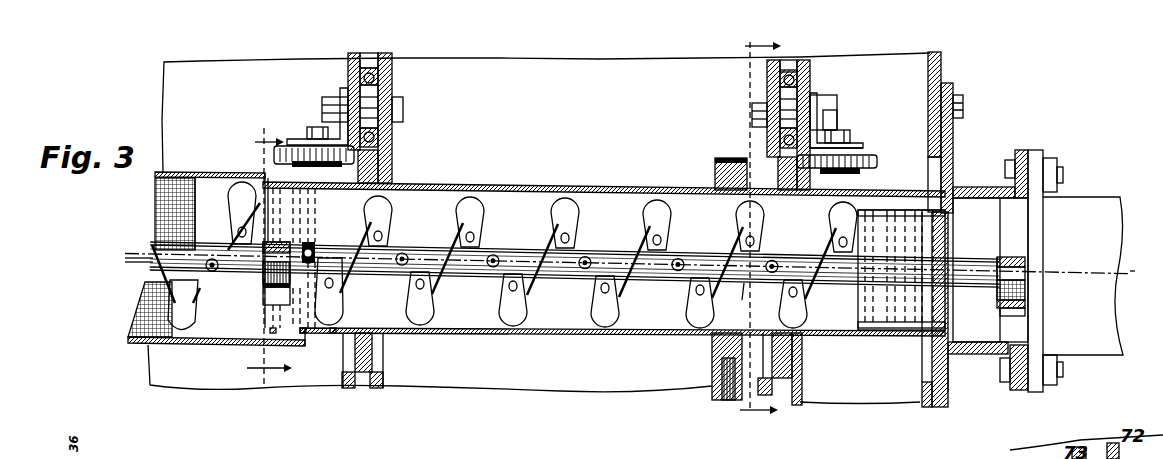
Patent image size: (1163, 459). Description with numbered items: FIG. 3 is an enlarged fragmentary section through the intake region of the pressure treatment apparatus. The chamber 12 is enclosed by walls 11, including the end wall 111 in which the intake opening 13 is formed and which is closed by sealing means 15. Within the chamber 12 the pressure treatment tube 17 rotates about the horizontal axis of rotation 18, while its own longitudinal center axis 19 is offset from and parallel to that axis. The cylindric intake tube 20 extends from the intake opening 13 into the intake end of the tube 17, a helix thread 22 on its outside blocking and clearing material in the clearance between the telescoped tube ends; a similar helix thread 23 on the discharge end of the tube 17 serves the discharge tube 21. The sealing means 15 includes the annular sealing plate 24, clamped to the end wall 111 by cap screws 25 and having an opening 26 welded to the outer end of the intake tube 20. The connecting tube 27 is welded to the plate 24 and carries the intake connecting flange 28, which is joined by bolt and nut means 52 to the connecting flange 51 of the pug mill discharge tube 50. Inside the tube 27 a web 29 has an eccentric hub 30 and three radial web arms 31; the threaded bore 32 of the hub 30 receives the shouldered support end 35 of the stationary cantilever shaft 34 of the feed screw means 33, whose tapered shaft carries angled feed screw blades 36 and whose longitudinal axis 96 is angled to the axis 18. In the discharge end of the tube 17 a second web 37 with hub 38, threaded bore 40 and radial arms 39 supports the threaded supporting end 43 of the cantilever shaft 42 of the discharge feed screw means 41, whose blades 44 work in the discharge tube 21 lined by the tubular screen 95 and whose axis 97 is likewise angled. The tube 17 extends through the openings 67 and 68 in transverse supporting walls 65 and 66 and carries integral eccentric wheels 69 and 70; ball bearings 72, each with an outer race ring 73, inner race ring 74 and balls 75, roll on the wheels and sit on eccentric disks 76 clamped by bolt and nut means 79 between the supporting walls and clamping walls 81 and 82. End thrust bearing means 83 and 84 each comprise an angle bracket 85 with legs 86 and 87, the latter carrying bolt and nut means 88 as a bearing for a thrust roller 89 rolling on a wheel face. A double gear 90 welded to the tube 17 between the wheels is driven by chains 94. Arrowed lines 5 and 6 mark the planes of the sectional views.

The section line 5- 5 is at (751, 231).
The section line 6- 6 is at (258, 254).
The walls 11 is at (942, 60).
The chamber 12 is at (536, 354).
The intake opening 13 is at (922, 372).
The sealing means 15 is at (977, 360).
The pressure treatment tube 17 is at (590, 175).
The axis of rotation 18 is at (1068, 274).
The longitudinal center axis 19 is at (708, 255).
The intake tube 20 is at (935, 218).
The discharge tube 21 is at (205, 173).
The helix thread 22 is at (937, 185).
The helix thread 23 is at (312, 335).
The annular sealing plate 24 is at (953, 140).
The cap screws 25 is at (963, 105).
The opening 26 is at (945, 340).
The web supporting and connecting tube 27 is at (985, 187).
The intake connecting flange 28 is at (1023, 153).
The web 29 is at (1017, 318).
The hub 30 is at (1020, 260).
The radial web arms 31 is at (1010, 217).
The internally threaded bore 32 is at (1030, 282).
The feed screw means 33 is at (805, 250).
The cantilever shaft 34 is at (826, 285).
The support end 35 is at (1000, 290).
The feed screw blades 36 is at (480, 221).
The web 37 is at (268, 303).
The hub 38 is at (312, 250).
The radial web arms 39 is at (277, 204).
The internally threaded bore 40 is at (282, 242).
The discharge tube feed screw means 41 is at (222, 232).
The cantilever shaft 42 is at (150, 248).
The supporting end 43 is at (258, 285).
The feed screw blades 44 is at (193, 345).
The discharge tube 50 is at (1098, 307).
The connecting flange 51 is at (1035, 392).
The bolt and nut means 52 is at (1052, 383).
The transverse supporting wall 65 is at (802, 390).
The transverse supporting wall 66 is at (383, 381).
The central circular opening 67 is at (793, 365).
The central circular opening 68 is at (383, 358).
The wheel 69 is at (773, 167).
The wheel 70 is at (380, 168).
The ball bearing 72 is at (385, 53).
The outer race ring 73 is at (350, 70).
The inner race ring 74 is at (372, 78).
The balls 75 is at (372, 80).
The eccentric disk 76 is at (378, 105).
The bolt and nut means 79 is at (403, 110).
The transverse clamping wall 81 is at (767, 70).
The clamping wall 82 is at (355, 53).
The end thrust bearing means 83 is at (858, 135).
The end thrust bearing means 84 is at (305, 128).
The angle bracket 85 is at (860, 142).
The leg 86 is at (815, 100).
The leg 87 is at (863, 146).
The bolt and nut means 88 is at (845, 172).
The thrust roller 89 is at (277, 152).
The double gear 90 is at (715, 350).
The chains 94 is at (720, 377).
The screen lining means 95 is at (155, 205).
The longitudinal axis 96 is at (742, 288).
The longitudinal axis 97 is at (135, 275).
The end wall 111 is at (922, 400).